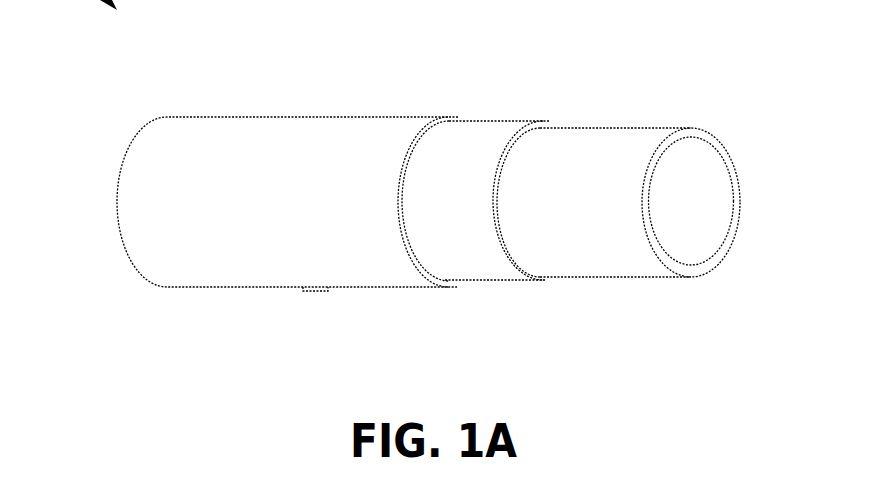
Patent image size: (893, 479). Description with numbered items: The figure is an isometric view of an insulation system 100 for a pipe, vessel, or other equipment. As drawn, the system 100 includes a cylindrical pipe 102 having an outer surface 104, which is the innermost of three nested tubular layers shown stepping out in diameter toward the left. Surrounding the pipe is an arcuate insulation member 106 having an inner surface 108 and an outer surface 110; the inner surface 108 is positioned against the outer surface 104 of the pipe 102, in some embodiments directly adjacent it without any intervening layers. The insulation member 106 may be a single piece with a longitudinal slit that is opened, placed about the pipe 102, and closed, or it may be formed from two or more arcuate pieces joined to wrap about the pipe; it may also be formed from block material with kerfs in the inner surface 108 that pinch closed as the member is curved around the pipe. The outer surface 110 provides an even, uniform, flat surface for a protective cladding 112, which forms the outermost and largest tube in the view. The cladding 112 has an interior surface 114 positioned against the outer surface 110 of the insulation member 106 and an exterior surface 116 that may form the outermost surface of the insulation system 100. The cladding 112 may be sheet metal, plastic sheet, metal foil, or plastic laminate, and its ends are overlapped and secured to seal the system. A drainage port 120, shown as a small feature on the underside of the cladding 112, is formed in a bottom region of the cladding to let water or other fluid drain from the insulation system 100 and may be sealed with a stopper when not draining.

The insulation system 100 is at (104, 430).
The cylindrical pipe 102 is at (703, 272).
The outer surface 104 is at (632, 128).
The arcuate insulation member 106 is at (538, 280).
The inner surface 108 is at (500, 213).
The outer surface 110 is at (498, 121).
The protective cladding 112 is at (448, 117).
The interior surface 114 is at (402, 212).
The exterior surface 116 is at (255, 116).
The drainage port 120 is at (320, 291).